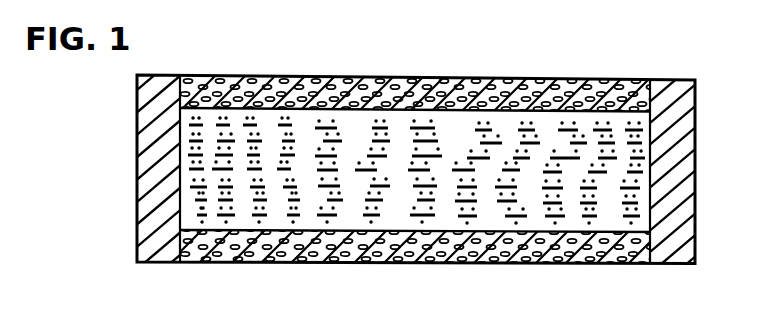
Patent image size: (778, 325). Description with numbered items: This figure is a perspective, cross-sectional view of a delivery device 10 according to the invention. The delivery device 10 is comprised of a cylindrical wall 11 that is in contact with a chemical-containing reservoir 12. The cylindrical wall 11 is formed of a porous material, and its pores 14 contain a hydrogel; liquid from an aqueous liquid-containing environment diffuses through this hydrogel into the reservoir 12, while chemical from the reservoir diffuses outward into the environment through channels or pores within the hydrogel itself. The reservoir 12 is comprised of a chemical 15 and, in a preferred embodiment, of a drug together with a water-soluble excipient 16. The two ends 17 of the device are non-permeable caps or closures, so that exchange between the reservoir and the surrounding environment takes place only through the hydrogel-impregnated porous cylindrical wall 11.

The delivery device 10 is at (609, 81).
The cylindrical wall 11 is at (542, 86).
The chemical-containing reservoir 12 is at (458, 236).
The pores 14 is at (276, 76).
The chemical 15 is at (405, 228).
The water-soluble excipient 16 is at (380, 216).
The ends 17 is at (150, 213).